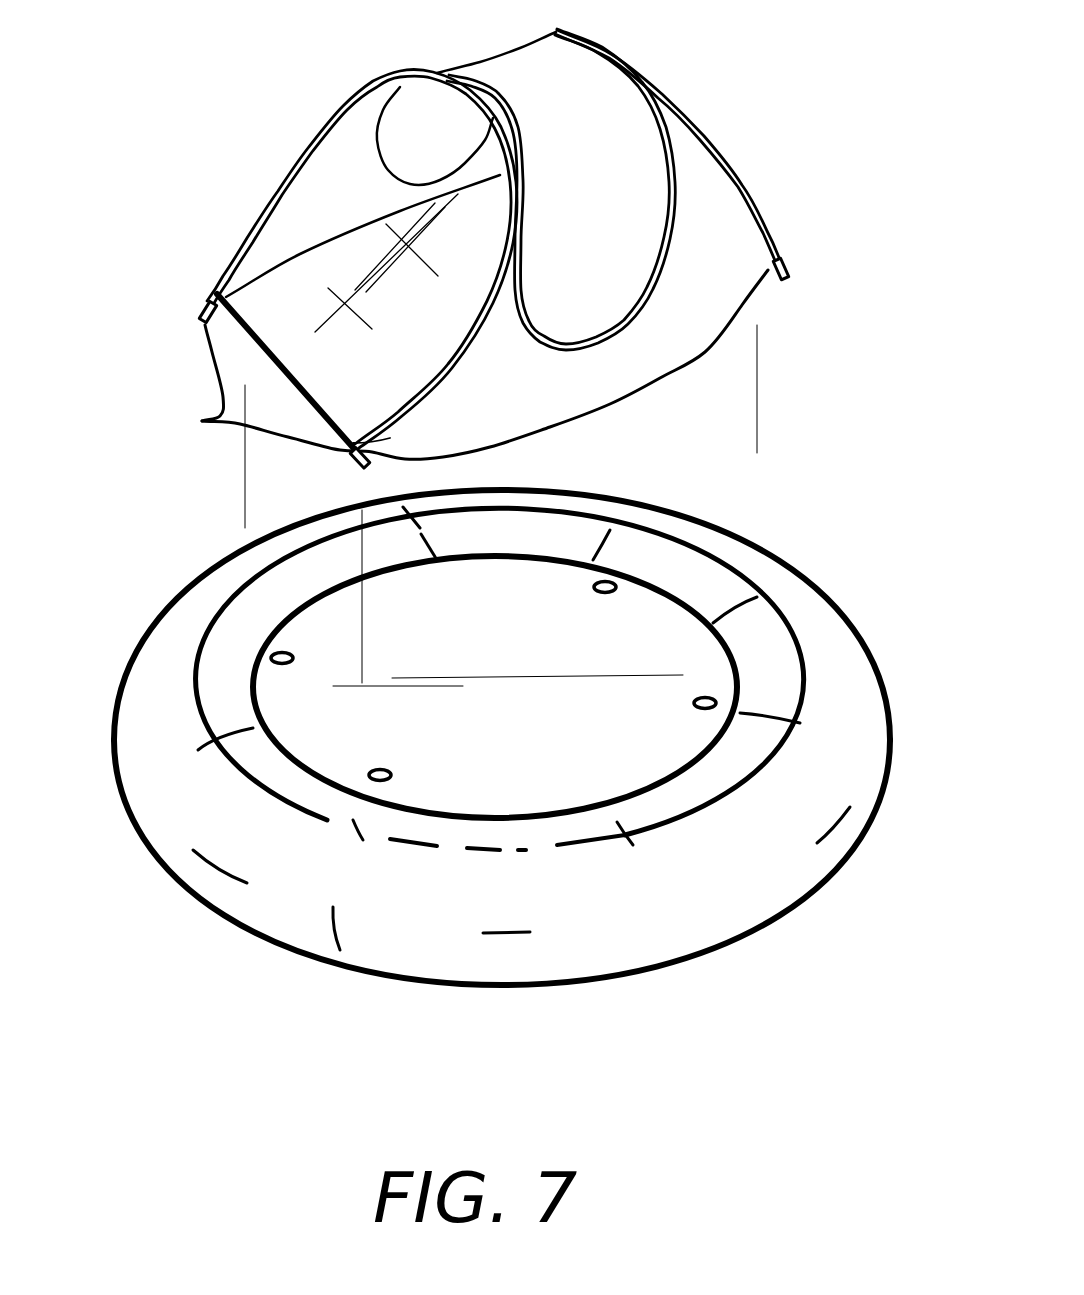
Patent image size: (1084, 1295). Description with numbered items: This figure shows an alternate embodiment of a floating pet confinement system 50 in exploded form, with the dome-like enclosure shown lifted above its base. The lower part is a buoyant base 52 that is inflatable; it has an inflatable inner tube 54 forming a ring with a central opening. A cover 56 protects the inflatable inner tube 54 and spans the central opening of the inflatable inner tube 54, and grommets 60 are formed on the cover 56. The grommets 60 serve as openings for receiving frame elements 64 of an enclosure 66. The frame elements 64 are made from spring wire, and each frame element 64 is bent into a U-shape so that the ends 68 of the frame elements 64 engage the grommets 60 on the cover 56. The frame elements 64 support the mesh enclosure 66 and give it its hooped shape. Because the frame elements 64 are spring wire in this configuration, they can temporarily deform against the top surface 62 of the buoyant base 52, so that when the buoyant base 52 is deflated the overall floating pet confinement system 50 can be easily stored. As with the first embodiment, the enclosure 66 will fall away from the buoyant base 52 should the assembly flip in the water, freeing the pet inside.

The floating pet confinement system 50 is at (127, 177).
The buoyant base 52 is at (863, 623).
The inflatable inner tube 54 is at (853, 732).
The cover 56 is at (633, 632).
The grommets 60 is at (695, 708).
The top surface 62 is at (322, 637).
The frame elements 64 is at (790, 263).
The enclosure 66 is at (690, 128).
The ends 68 is at (222, 419).